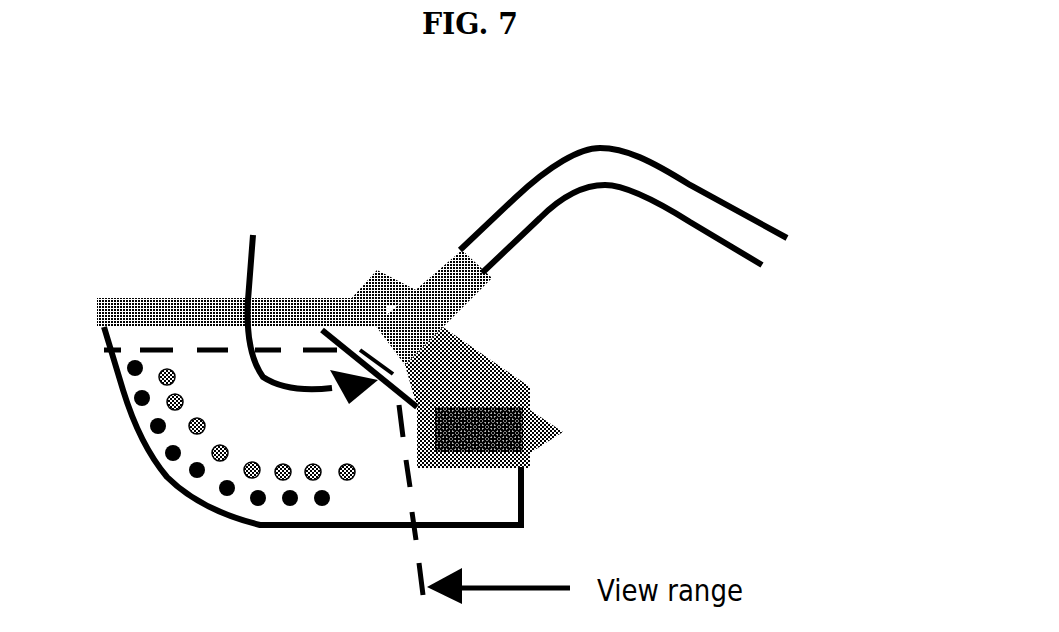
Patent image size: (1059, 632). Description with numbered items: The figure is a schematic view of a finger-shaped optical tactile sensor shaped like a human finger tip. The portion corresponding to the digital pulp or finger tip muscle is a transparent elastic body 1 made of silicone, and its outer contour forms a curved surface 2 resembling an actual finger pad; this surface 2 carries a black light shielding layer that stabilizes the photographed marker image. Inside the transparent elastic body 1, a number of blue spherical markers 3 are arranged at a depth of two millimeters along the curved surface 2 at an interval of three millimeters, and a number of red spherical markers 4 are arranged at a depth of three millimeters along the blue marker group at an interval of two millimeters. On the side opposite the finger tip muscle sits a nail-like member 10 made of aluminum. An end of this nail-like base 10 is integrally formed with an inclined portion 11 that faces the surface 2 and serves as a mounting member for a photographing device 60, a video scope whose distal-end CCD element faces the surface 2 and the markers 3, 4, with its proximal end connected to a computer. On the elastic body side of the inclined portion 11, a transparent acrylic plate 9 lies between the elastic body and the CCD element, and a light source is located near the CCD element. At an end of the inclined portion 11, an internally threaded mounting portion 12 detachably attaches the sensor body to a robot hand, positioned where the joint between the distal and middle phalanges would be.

The transparent elastic body 1 is at (52, 337).
The surface 2 is at (165, 478).
The blue spherical markers 3 is at (228, 492).
The red spherical markers 4 is at (347, 480).
The transparent acrylic plate 9 is at (310, 290).
The nail-like member 10 is at (345, 258).
The inclined portion 11 is at (495, 357).
The mounting portion 12 is at (528, 455).
The photographing device 60 is at (530, 200).